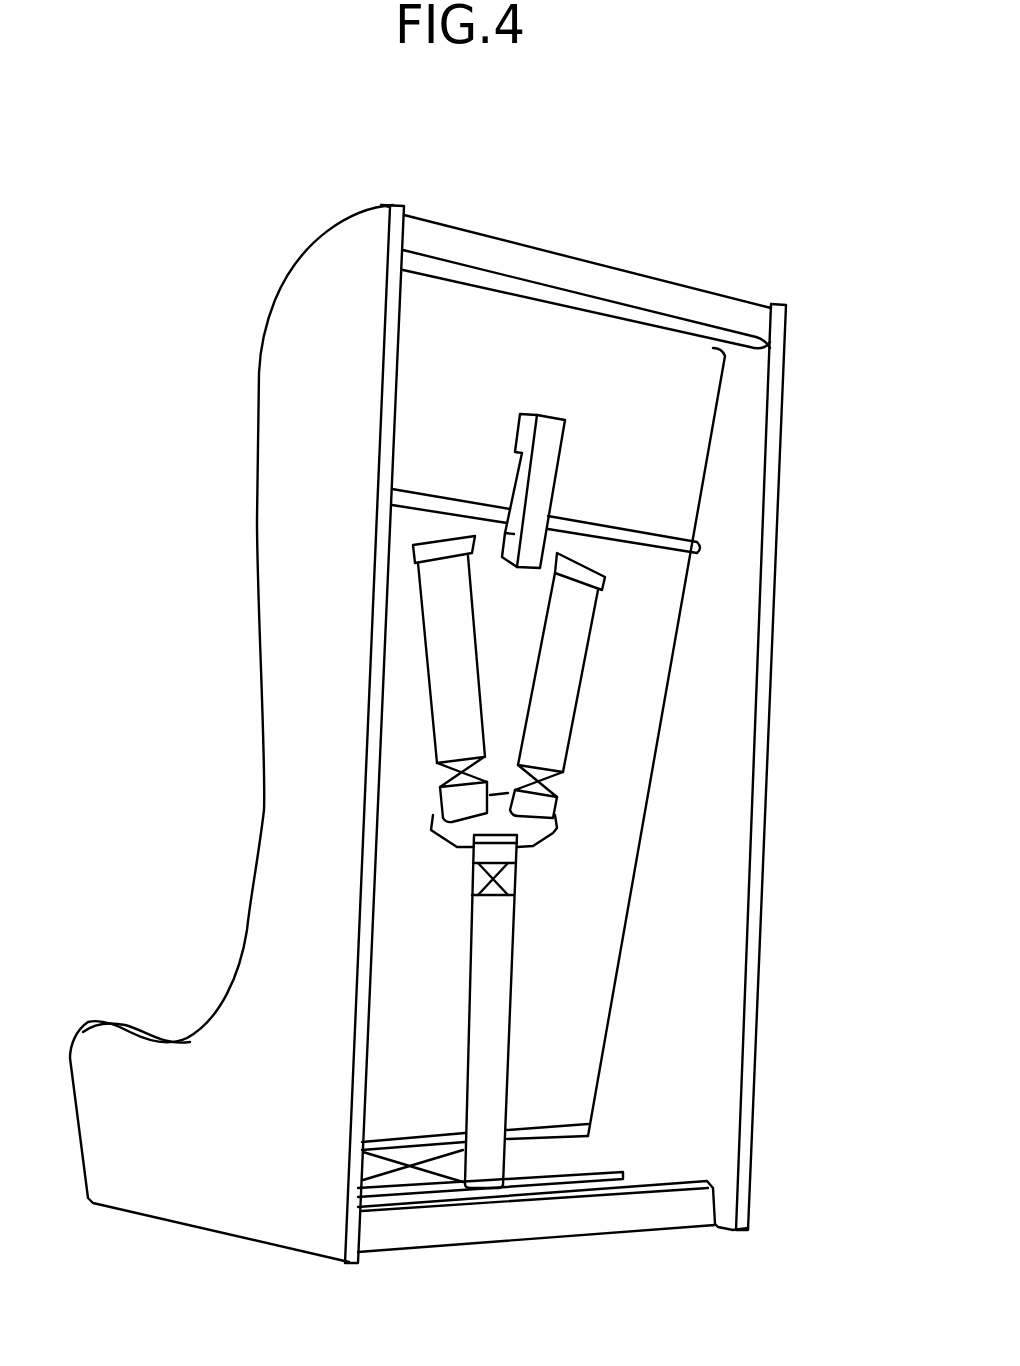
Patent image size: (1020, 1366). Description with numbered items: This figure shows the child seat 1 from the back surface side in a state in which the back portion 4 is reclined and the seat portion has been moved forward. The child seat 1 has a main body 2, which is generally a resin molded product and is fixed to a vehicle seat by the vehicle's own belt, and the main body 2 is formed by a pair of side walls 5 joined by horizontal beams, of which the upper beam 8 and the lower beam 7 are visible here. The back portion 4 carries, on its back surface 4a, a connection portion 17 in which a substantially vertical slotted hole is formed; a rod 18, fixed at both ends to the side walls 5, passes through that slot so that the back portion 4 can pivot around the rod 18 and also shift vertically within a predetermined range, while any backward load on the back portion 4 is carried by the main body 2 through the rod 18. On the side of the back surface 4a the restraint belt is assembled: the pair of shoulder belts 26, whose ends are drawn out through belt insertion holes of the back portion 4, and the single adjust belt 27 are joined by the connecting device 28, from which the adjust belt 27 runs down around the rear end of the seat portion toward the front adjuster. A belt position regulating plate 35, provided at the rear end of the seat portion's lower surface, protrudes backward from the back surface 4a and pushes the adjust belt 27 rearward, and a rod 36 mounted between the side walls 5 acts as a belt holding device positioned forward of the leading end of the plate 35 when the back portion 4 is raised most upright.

The child seat 1 is at (108, 505).
The main body 2 is at (258, 372).
The back portion 4 is at (611, 666).
The back surface 4a is at (673, 583).
The side walls 5 is at (757, 763).
The horizontal beam 7 is at (647, 1217).
The horizontal beam 8 is at (728, 307).
The connection portion 17 is at (547, 457).
The rod 18 is at (655, 530).
The shoulder belts 26 is at (572, 655).
The adjust belt 27 is at (505, 1023).
The connecting device 28 is at (537, 830).
The belt position regulating plate 35 is at (395, 1157).
The rod 36 is at (553, 1182).